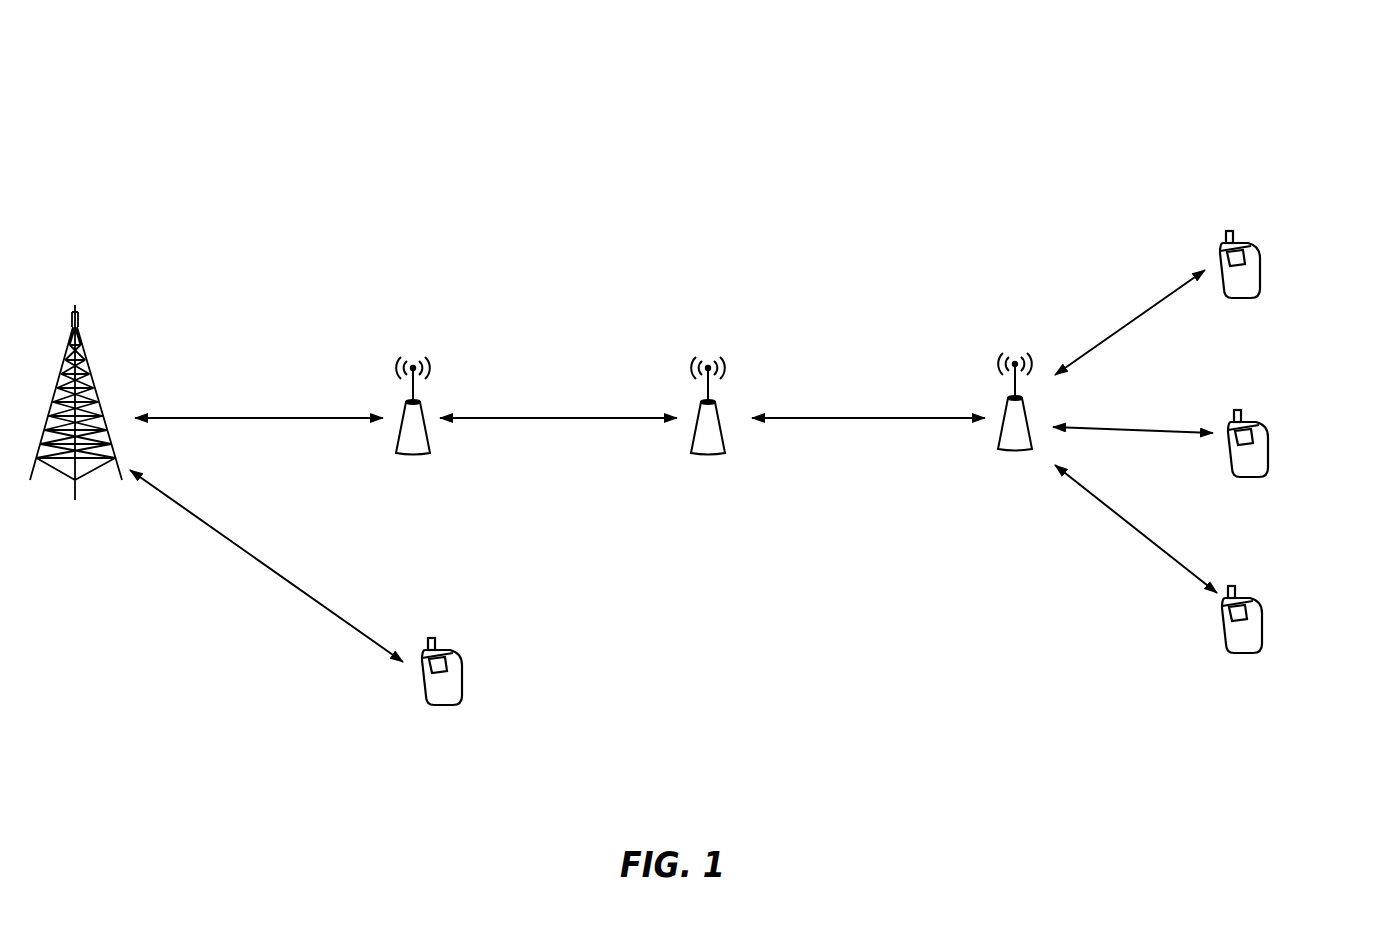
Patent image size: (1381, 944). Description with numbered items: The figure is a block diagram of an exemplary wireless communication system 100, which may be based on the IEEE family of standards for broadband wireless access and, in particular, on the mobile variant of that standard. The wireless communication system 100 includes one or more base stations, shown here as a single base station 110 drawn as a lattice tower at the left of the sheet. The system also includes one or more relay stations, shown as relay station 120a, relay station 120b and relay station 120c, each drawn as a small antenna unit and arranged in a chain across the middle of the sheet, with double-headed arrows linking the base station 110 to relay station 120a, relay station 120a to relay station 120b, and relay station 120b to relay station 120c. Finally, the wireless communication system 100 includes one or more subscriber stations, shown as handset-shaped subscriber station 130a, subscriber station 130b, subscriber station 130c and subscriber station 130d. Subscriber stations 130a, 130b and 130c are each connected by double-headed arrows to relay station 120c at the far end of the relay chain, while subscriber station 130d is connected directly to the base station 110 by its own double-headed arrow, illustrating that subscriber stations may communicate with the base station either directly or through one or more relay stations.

The wireless communication system 100 is at (1074, 86).
The base station 110 is at (83, 315).
The relay station 120a is at (415, 338).
The relay station 120b is at (706, 352).
The relay station 120c is at (1005, 350).
The subscriber station 130a is at (1255, 247).
The subscriber station 130b is at (1265, 425).
The subscriber station 130c is at (1260, 602).
The subscriber station 130d is at (465, 655).